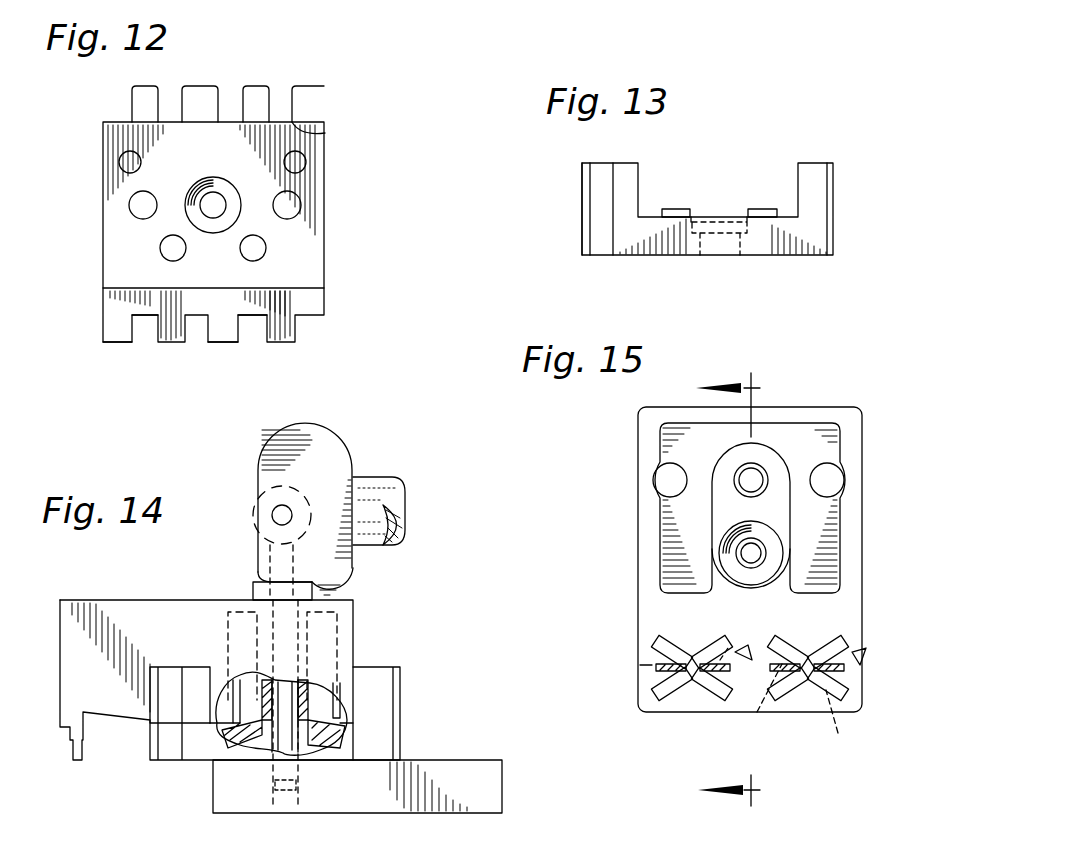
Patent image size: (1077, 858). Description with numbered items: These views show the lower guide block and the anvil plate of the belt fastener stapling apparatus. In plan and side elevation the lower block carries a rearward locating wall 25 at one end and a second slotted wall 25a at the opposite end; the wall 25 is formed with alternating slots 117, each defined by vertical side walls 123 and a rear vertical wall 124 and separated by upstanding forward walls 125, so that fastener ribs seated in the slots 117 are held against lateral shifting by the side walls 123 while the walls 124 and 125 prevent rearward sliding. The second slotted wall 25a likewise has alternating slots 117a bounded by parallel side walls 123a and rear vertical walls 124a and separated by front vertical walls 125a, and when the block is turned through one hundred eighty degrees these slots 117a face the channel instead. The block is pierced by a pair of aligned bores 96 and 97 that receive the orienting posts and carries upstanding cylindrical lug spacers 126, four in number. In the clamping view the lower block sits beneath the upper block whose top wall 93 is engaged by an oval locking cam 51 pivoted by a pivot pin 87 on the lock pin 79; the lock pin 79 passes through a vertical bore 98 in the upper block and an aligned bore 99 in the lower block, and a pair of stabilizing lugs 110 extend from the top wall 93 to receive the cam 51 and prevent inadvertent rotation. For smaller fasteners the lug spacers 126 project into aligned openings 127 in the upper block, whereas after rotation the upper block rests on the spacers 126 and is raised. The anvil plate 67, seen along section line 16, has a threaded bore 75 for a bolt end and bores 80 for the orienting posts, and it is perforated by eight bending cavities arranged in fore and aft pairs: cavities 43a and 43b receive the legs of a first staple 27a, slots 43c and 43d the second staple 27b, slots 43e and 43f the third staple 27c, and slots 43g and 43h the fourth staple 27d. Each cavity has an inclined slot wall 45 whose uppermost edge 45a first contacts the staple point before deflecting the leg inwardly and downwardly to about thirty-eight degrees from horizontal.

In FIG. 12, the rearward locating wall 25 is at (126, 356).
In FIG. 13, the rearward locating wall 25 is at (572, 187).
In FIG. 14, the rearward locating wall 25 is at (164, 740).
In FIG. 12, the second slotted wall 25a is at (270, 60).
In FIG. 13, the second slotted wall 25a is at (828, 232).
In FIG. 14, the second slotted wall 25a is at (480, 678).
In FIG. 14, the locking cam 51 is at (318, 458).
In FIG. 15, the anvil plate 67 is at (855, 549).
In FIG. 15, the threaded bore 75 is at (756, 555).
In FIG. 14, the lock pin 79 is at (286, 700).
In FIG. 15, the bores 80 is at (672, 478).
In FIG. 14, the pivot pin 87 is at (272, 515).
In FIG. 14, the top wall 93 is at (132, 572).
In FIG. 12, the orienting bore 96 is at (143, 205).
In FIG. 12, the orienting bore 97 is at (283, 205).
In FIG. 14, the vertical bore 98 is at (270, 690).
In FIG. 14, the aligned bore 99 is at (272, 742).
In FIG. 14, the stabilizing lugs 110 is at (345, 570).
In FIG. 12, the alternating slots 117 is at (150, 330).
In FIG. 12, the alternating slots 117a is at (292, 90).
In FIG. 12, the vertical side walls 123 is at (240, 315).
In FIG. 13, the vertical side walls 123 is at (606, 246).
In FIG. 12, the parallel side walls 123a is at (165, 106).
In FIG. 12, the rear vertical wall 124 is at (148, 316).
In FIG. 12, the rear vertical walls 124a is at (325, 135).
In FIG. 12, the upstanding forward walls 125 is at (227, 344).
In FIG. 13, the upstanding forward walls 125 is at (585, 222).
In FIG. 12, the front vertical walls 125a is at (132, 92).
In FIG. 12, the lug spacers 126 is at (295, 162).
In FIG. 13, the lug spacers 126 is at (753, 209).
In FIG. 14, the lug spacers 126 is at (232, 736).
In FIG. 14, the aligned openings 127 is at (236, 690).
In FIG. 15, the section line 16- 16 is at (746, 597).
In FIG. 15, the bending cavity 43a is at (848, 645).
In FIG. 15, the bending cavity 43b is at (848, 676).
In FIG. 15, the bending slot 43c is at (778, 655).
In FIG. 15, the bending slot 43d is at (792, 698).
In FIG. 15, the bending slot 43e is at (716, 650).
In FIG. 15, the bending slot 43f is at (692, 702).
In FIG. 15, the bending slot 43g is at (700, 648).
In FIG. 15, the bending slot 43h is at (652, 698).
In FIG. 15, the inclined slot wall 45 is at (822, 652).
In FIG. 15, the uppermost edge 45a is at (652, 678).
In FIG. 15, the first staple 27a is at (848, 730).
In FIG. 15, the second staple 27b is at (758, 712).
In FIG. 15, the third staple 27c is at (741, 641).
In FIG. 15, the fourth staple 27d is at (652, 664).